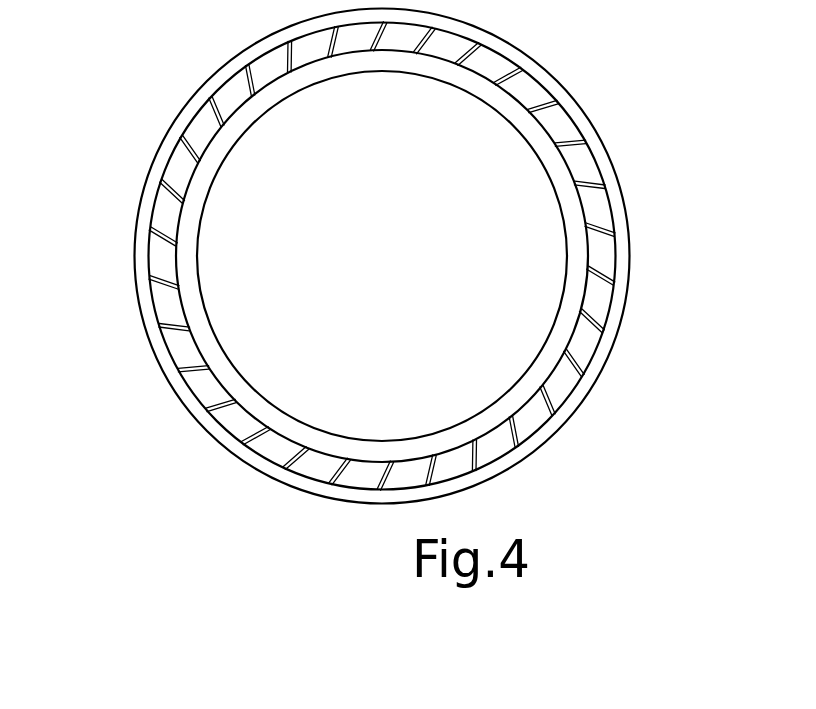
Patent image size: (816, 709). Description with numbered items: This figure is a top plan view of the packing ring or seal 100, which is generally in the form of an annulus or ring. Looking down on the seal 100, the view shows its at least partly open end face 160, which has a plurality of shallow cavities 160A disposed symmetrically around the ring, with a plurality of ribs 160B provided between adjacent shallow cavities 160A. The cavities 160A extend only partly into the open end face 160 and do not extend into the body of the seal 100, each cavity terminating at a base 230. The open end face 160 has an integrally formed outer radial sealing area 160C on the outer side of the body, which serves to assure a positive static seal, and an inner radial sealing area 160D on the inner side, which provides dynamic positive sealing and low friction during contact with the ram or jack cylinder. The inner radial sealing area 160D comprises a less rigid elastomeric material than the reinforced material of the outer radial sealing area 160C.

The seal 100 is at (186, 56).
The at least partly open end face 160 is at (533, 249).
The shallow cavities 160A is at (593, 207).
The ribs 160B is at (514, 68).
The outer radial sealing area 160C is at (170, 130).
The inner radial sealing area 160D is at (457, 86).
The base of cavity 230 is at (580, 162).